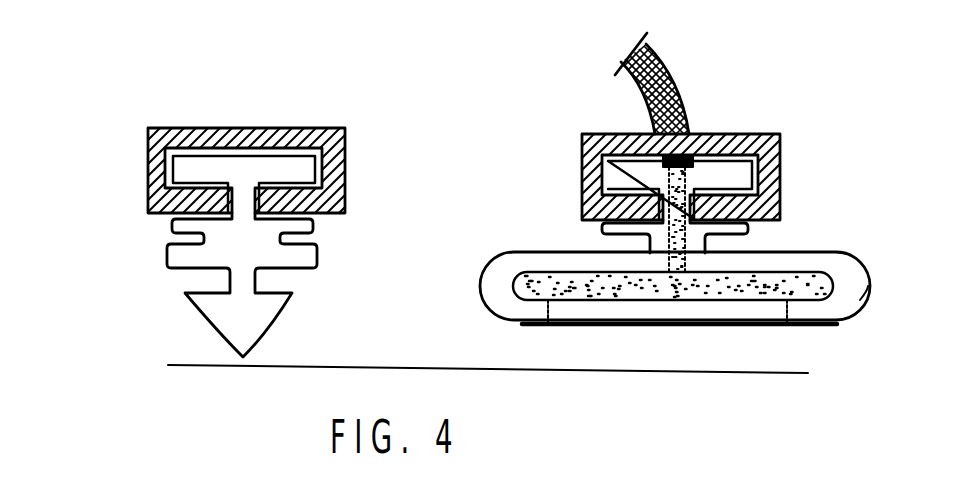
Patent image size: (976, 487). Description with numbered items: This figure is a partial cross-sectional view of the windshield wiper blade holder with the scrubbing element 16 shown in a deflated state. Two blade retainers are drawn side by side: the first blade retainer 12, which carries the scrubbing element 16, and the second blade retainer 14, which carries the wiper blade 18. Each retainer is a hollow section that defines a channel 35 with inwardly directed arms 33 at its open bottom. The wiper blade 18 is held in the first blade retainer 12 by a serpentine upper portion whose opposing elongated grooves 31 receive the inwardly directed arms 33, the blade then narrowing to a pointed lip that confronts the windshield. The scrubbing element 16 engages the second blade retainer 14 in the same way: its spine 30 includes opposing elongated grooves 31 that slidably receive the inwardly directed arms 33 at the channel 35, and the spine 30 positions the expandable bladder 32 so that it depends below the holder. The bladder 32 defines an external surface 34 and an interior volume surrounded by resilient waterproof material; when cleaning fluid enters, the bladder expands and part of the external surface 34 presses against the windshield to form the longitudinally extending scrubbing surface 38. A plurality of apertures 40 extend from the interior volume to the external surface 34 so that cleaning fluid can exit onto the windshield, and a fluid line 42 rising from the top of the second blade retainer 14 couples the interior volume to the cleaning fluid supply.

The first blade retainer 12 is at (343, 132).
The second blade retainer 14 is at (582, 137).
The scrubbing element 16 is at (318, 255).
The wiper blade 18 is at (500, 254).
The spine portion 30 is at (238, 218).
The elongated grooves 31 is at (177, 220).
The expandable bladder 32 is at (777, 263).
The inwardly directed arms 33 is at (148, 202).
The external surface 34 is at (850, 317).
The channel 35 is at (250, 155).
The scrubbing surface 38 is at (637, 325).
The apertures 40 is at (537, 323).
The fluid line 42 is at (682, 115).